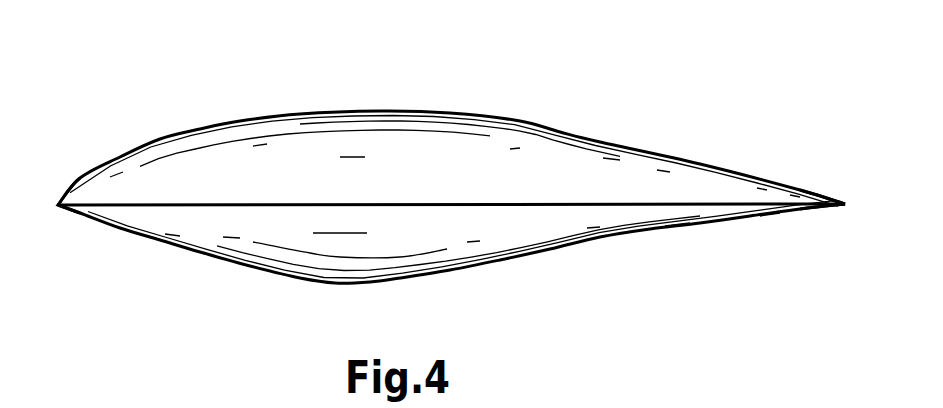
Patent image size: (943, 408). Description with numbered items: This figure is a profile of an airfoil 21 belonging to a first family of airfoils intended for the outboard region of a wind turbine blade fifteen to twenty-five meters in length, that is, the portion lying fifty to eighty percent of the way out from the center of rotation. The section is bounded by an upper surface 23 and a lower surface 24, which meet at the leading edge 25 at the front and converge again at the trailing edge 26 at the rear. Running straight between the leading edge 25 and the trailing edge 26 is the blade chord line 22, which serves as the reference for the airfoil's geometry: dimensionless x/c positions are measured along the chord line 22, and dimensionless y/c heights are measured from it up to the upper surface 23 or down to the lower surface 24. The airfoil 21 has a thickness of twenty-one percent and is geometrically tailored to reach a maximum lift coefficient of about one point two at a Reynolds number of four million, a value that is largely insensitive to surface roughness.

The airfoil 21 is at (521, 60).
The chord line 22 is at (513, 205).
The upper surface 23 is at (420, 112).
The lower surface 24 is at (347, 285).
The leading edge 25 is at (58, 207).
The trailing edge 26 is at (848, 205).